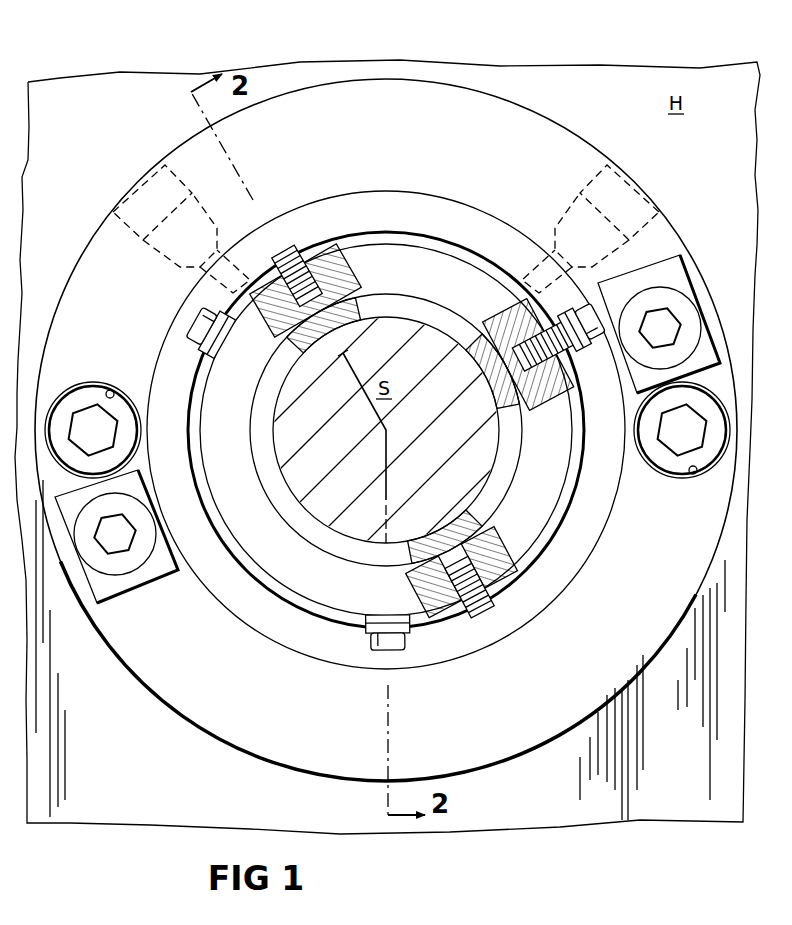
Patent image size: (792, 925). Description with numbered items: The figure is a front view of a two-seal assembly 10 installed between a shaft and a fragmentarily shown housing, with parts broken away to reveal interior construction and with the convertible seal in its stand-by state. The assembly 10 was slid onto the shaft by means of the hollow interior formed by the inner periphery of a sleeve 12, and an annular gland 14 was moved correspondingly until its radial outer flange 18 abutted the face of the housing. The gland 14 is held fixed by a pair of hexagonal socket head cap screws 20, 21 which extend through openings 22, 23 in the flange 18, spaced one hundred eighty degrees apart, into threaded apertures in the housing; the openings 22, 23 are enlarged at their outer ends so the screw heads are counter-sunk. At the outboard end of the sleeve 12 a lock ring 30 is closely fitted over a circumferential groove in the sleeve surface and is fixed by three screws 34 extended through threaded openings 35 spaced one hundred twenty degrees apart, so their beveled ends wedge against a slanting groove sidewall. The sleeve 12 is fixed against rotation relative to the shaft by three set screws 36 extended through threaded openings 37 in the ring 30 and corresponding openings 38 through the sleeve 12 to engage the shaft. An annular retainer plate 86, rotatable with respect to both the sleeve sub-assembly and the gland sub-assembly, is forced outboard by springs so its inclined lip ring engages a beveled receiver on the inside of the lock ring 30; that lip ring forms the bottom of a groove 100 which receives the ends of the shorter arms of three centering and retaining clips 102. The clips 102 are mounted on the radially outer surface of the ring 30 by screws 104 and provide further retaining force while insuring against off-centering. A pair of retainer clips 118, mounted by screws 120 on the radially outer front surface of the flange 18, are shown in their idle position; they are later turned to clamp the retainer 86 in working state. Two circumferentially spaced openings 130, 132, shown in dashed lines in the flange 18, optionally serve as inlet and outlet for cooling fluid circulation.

The seal assembly 10 is at (150, 707).
The sleeve 12 is at (318, 548).
The annular gland 14 is at (491, 90).
The radial outer flange 18 is at (422, 737).
The screw 20 is at (69, 408).
The screw 21 is at (663, 451).
The opening 22 is at (114, 391).
The opening 23 is at (695, 474).
The lock ring 30 is at (483, 549).
The screw 34 is at (313, 281).
The threaded opening 35 is at (310, 272).
The set screw 36 is at (485, 533).
The threaded opening 37 is at (461, 586).
The opening 38 is at (433, 538).
The annular retainer plate 86 is at (479, 204).
The groove 100 is at (388, 238).
The centering and retaining clip 102 is at (568, 355).
The screw 104 is at (197, 320).
The retainer clip 118 is at (650, 266).
The screw 120 is at (678, 308).
The opening 130 is at (178, 177).
The opening 132 is at (594, 177).